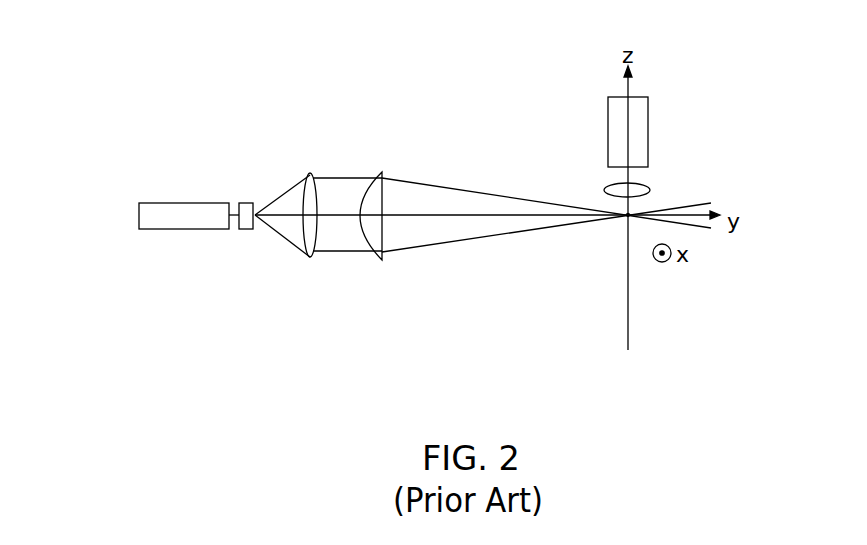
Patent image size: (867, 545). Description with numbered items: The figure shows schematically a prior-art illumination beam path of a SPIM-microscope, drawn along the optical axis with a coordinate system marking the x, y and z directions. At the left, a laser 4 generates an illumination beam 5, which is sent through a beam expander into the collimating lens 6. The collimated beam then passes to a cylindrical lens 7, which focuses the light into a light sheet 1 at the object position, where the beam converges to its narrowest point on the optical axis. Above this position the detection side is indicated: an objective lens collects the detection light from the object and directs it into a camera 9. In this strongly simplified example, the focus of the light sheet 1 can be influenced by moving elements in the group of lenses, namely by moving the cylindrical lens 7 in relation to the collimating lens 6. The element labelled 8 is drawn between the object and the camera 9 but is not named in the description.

The light sheet 1 is at (621, 225).
The laser 4 is at (181, 229).
The illumination beam 5 is at (238, 229).
The collimating lens 6 is at (310, 240).
The cylindrical lens 7 is at (371, 240).
The sample / target plane 8 is at (640, 190).
The camera 9 is at (638, 125).